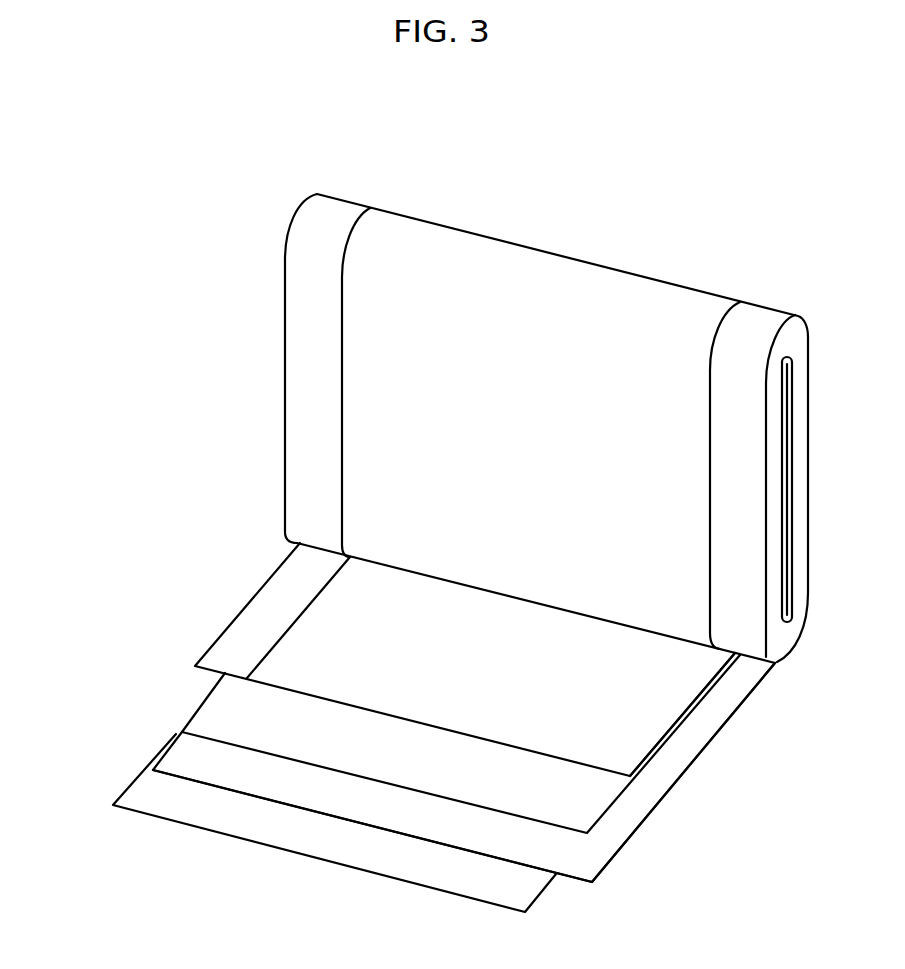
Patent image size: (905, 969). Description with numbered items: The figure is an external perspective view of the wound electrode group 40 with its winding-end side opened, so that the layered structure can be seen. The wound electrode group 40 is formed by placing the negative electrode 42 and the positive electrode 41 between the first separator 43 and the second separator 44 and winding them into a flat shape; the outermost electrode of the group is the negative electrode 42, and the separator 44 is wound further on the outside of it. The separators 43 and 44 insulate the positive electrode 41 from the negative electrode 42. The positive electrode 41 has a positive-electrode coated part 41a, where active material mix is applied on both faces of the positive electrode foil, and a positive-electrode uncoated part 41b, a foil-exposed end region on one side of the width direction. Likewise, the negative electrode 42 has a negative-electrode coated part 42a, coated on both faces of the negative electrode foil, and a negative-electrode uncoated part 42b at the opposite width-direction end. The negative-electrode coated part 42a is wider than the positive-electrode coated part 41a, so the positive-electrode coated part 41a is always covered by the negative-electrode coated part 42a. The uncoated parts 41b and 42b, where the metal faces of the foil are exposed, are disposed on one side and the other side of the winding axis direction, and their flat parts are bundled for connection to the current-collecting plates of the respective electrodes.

The wound electrode group 40 is at (571, 237).
The positive electrode 41 is at (253, 599).
The positive-electrode coated part 41a is at (677, 708).
The positive-electrode uncoated part 41b is at (218, 641).
The negative electrode 42 is at (165, 751).
The negative-electrode coated part 42a is at (552, 850).
The negative-electrode uncoated part 42b is at (635, 812).
The first separator 43 is at (212, 705).
The second separator 44 is at (137, 790).